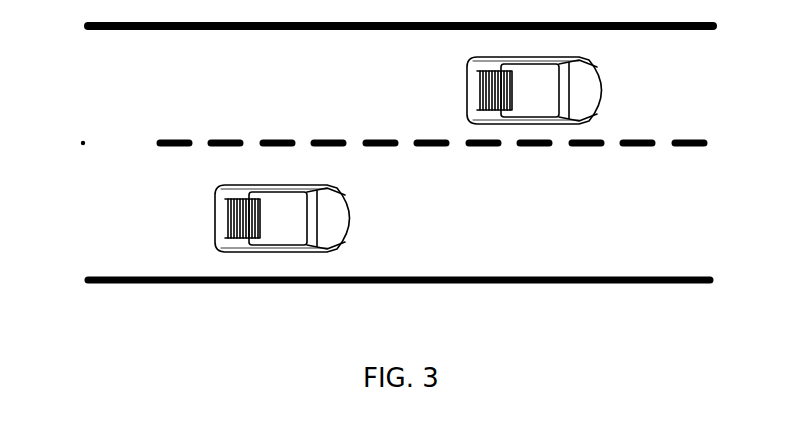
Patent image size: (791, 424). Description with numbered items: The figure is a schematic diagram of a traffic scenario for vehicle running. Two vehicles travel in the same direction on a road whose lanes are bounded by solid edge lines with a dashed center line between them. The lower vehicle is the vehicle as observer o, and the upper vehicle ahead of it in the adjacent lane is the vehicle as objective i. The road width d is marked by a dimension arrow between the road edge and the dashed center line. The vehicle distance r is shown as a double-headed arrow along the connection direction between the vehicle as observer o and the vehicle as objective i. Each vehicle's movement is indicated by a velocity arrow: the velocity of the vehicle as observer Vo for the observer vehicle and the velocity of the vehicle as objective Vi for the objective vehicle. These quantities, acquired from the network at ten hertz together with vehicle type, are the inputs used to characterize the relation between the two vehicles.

The road width d is at (165, 78).
The vehicle distance r is at (352, 193).
The vehicle as observer o is at (282, 218).
The vehicle as objective i is at (534, 90).
The velocity of the vehicle as observer Vo is at (372, 221).
The velocity of the vehicle as objective Vi is at (623, 90).